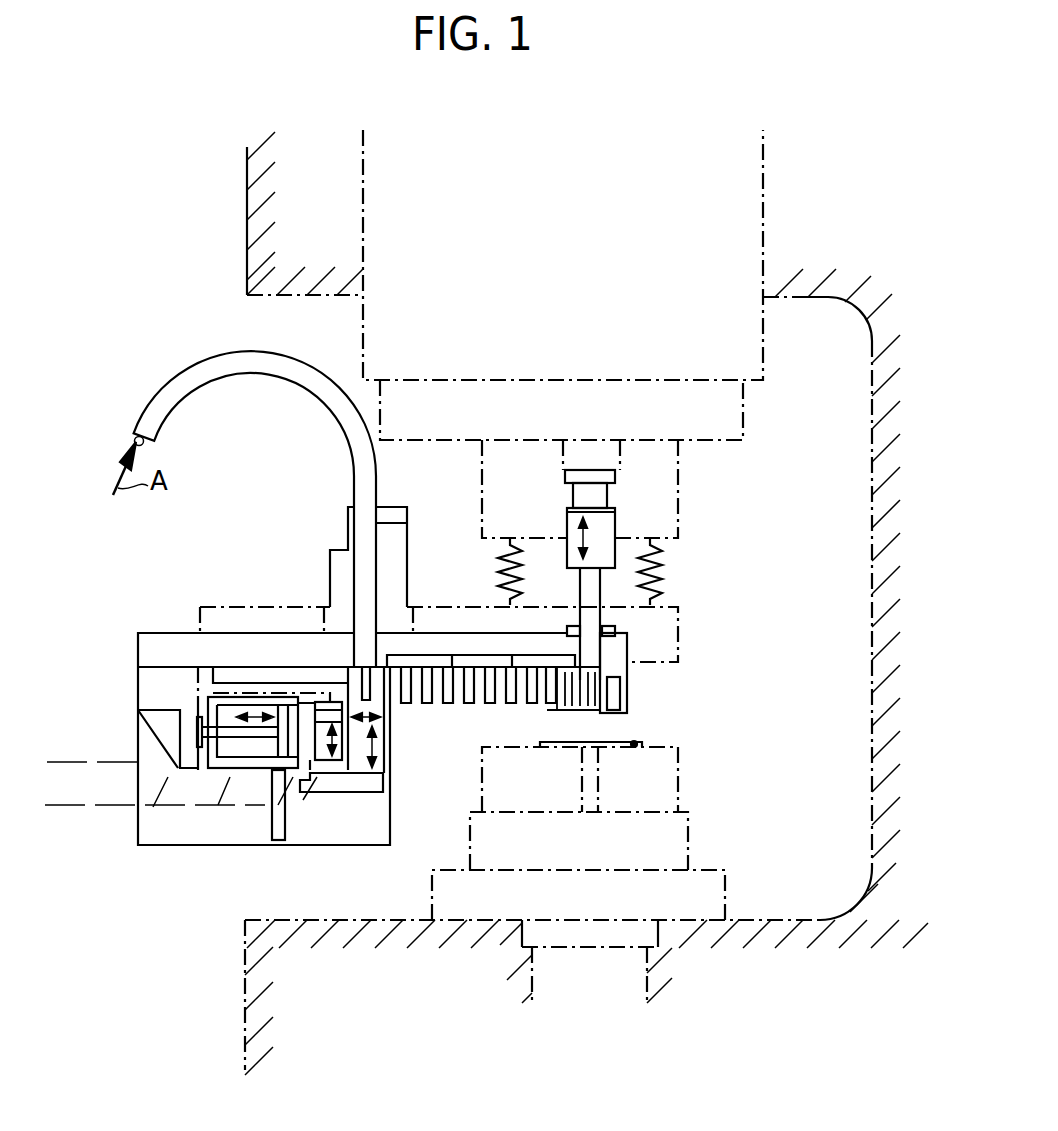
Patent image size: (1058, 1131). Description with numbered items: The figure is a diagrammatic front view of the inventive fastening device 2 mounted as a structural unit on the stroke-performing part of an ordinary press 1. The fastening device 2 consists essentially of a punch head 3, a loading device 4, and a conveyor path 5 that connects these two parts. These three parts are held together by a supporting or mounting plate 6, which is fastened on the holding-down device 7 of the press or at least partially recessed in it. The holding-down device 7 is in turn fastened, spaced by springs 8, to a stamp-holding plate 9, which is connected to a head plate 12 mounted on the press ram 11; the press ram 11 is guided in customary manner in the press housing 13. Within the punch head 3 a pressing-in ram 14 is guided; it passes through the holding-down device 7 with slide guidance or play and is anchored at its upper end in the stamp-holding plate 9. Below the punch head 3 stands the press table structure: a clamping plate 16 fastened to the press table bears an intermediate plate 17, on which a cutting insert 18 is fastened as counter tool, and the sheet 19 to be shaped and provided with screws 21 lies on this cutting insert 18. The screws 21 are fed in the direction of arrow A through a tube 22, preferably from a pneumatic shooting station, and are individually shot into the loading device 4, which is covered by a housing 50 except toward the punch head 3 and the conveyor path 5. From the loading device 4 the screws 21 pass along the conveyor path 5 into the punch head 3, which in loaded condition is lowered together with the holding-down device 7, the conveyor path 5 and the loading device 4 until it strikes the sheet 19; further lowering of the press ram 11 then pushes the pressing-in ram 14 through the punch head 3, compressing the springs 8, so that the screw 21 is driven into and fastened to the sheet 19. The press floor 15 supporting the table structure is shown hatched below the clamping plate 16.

The press 1 is at (804, 868).
The fastening device 2 is at (212, 547).
The punch head 3 is at (615, 668).
The loading device 4 is at (195, 828).
The conveyor path 5 is at (467, 658).
The supporting or mounting plate 6 is at (153, 650).
The holding-down device 7 is at (216, 618).
The springs 8 is at (503, 580).
The stamp-holding plate 9 is at (660, 494).
The press ram 11 is at (738, 338).
The head plate 12 is at (722, 415).
The press housing 13 is at (287, 217).
The pressing-in ram 14 is at (582, 597).
The floor 15 is at (277, 1003).
The clamping plate 16 is at (700, 893).
The intermediate plate 17 is at (667, 835).
The cutting insert 18 is at (657, 772).
The sheet 19 is at (636, 744).
The screws 21 is at (430, 705).
The tube 22 is at (170, 385).
The housing 50 is at (137, 700).